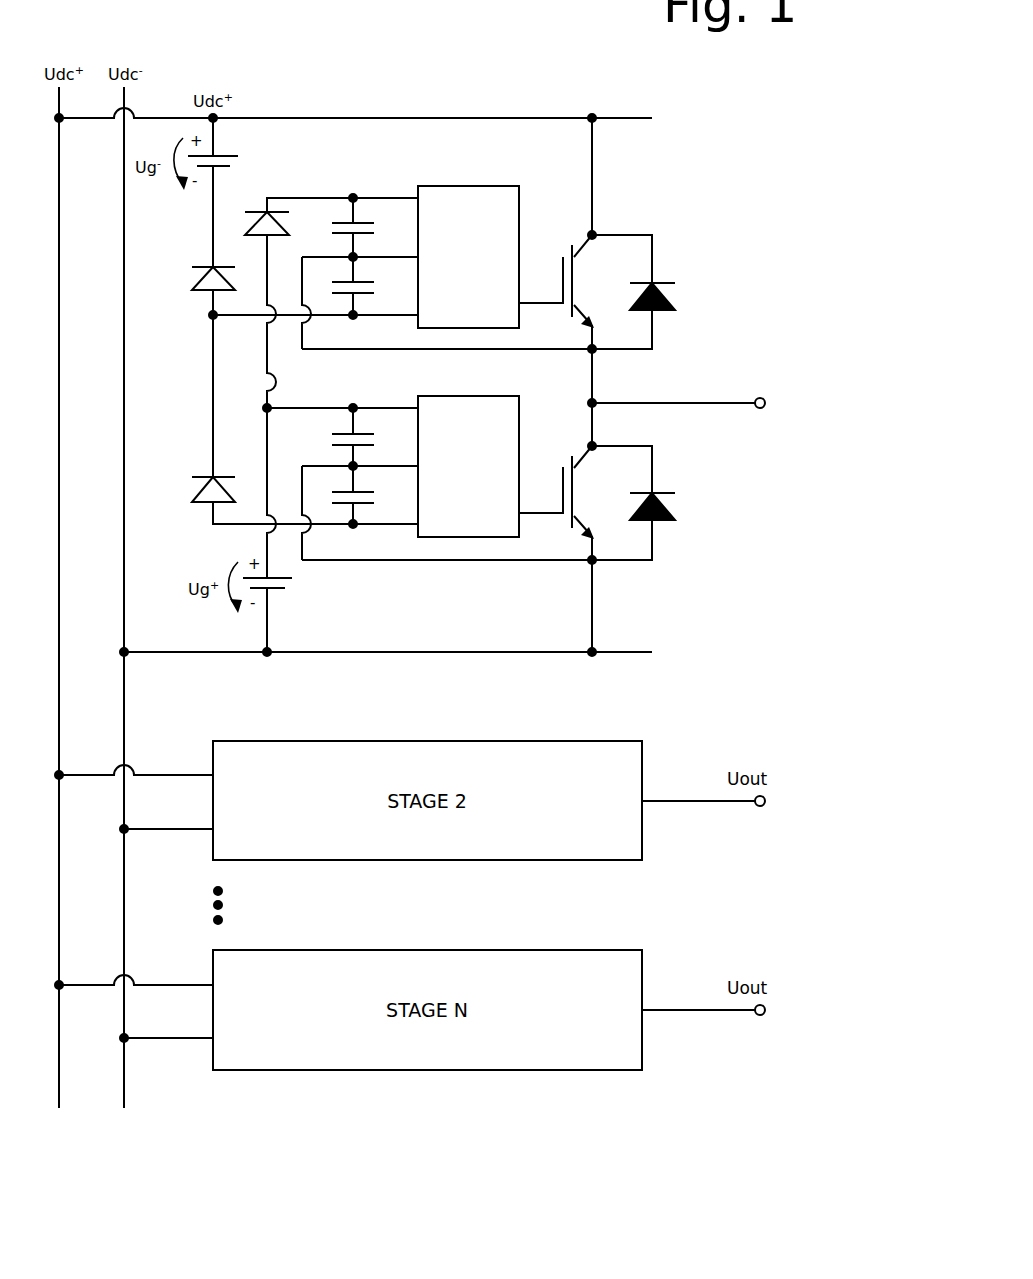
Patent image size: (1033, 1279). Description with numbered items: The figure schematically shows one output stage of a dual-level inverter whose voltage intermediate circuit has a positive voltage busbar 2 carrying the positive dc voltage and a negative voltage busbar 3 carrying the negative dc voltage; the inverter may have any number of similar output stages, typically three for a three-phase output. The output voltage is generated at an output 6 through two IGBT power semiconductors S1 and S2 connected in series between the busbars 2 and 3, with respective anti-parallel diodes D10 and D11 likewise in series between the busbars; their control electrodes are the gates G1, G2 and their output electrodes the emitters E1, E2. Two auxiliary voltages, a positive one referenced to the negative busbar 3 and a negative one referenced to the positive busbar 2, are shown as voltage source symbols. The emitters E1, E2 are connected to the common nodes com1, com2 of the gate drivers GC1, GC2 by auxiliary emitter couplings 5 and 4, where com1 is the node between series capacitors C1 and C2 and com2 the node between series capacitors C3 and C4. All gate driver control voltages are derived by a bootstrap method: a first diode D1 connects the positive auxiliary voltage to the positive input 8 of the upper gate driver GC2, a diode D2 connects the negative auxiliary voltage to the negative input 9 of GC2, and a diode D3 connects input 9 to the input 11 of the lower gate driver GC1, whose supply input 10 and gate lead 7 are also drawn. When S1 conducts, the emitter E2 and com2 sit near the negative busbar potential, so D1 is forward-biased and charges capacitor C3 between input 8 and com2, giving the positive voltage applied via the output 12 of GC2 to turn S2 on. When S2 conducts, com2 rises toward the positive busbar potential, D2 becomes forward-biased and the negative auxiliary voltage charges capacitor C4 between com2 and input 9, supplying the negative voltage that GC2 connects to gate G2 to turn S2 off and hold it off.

The positive voltage busbar 2 is at (410, 117).
The negative voltage busbar 3 is at (413, 651).
The auxiliary emitter coupling 4 is at (443, 352).
The auxiliary emitter coupling 5 is at (443, 562).
The output 6 is at (757, 410).
The gate control line of switch S1 7 is at (523, 517).
The positive input of gate driver GC2 8 is at (356, 197).
The negative auxiliary voltage input of gate driver GC2 9 is at (356, 318).
The supply node of gate circuit GC1 10 is at (350, 410).
The input of gate driver GC1 11 is at (356, 527).
The output of gate driver GC2 12 is at (523, 308).
The first diode D1 is at (264, 209).
The diode D2 is at (207, 267).
The diode D3 is at (208, 476).
The anti-parallel diode D10 is at (657, 503).
The anti-parallel diode D11 is at (657, 292).
The capacitor C1 is at (368, 437).
The capacitor C2 is at (368, 495).
The capacitor C3 is at (368, 227).
The capacitor C4 is at (368, 286).
The gate driver GC1 is at (468, 466).
The gate driver GC2 is at (468, 257).
The semiconductor switch S1 is at (592, 547).
The semiconductor switch S2 is at (592, 235).
The gate G1 is at (561, 480).
The gate G2 is at (561, 272).
The emitter E1 is at (596, 563).
The emitter E2 is at (596, 353).
The common node com1 is at (350, 466).
The common node com2 is at (350, 257).